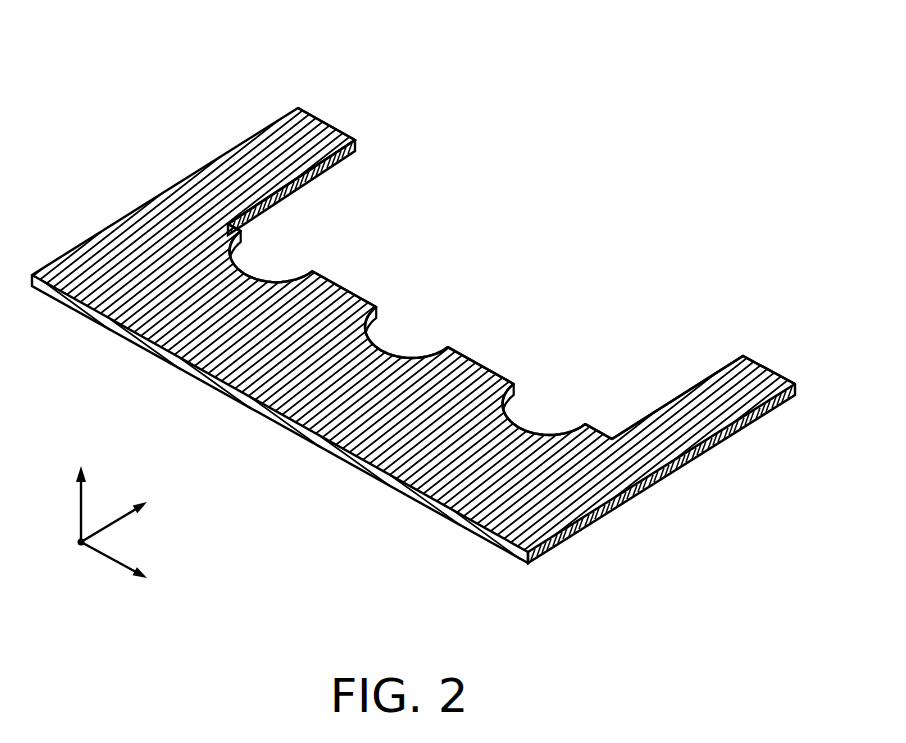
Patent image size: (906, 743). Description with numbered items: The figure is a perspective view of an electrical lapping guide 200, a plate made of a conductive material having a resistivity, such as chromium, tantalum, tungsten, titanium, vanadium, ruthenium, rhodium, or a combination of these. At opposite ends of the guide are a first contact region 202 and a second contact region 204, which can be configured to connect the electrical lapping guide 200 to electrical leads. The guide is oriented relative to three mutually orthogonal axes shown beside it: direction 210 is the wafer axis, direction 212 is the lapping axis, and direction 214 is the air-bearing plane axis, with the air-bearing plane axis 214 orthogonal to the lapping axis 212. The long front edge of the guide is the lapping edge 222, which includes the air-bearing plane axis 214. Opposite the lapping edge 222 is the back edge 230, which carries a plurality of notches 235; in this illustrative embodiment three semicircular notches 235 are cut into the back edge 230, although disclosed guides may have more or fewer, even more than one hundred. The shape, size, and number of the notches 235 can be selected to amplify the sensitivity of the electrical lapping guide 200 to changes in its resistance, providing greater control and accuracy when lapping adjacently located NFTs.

The electrical lapping guide 200 is at (181, 56).
The first contact region 202 is at (333, 134).
The second contact region 204 is at (773, 380).
The wafer axis 210 is at (81, 505).
The lapping axis 212 is at (105, 522).
The air-bearing plane axis 214 is at (108, 560).
The lapping edge 222 is at (490, 537).
The back edge 230 is at (347, 289).
The notches 235 is at (390, 345).